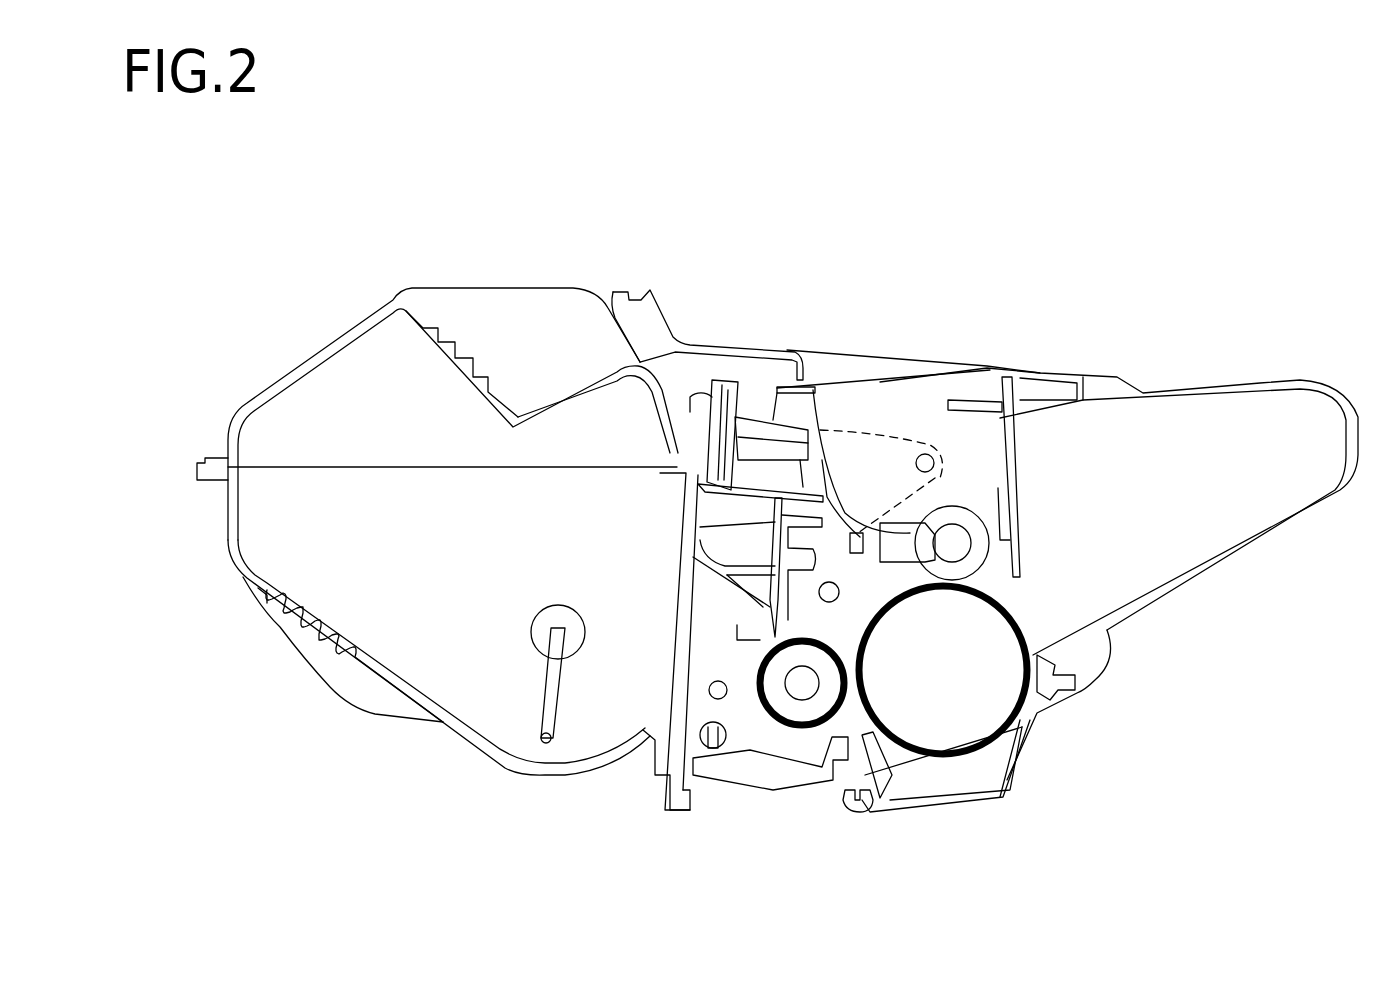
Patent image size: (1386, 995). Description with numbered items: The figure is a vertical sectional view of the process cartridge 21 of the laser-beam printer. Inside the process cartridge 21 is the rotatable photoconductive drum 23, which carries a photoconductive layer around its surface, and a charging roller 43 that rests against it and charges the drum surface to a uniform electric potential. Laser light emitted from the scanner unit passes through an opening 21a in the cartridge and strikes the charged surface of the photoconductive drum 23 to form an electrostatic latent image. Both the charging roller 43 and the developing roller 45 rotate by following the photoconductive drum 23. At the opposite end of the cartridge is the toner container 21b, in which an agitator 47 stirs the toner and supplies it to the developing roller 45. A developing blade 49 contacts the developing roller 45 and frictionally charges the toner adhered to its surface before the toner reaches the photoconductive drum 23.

The process cartridge 21 is at (632, 236).
The opening 21a is at (838, 388).
The toner container 21b is at (412, 370).
The photoconductive drum 23 is at (925, 757).
The charging roller 43 is at (1000, 530).
The developing roller 45 is at (790, 713).
The agitator 47 is at (546, 745).
The developing blade 49 is at (770, 607).